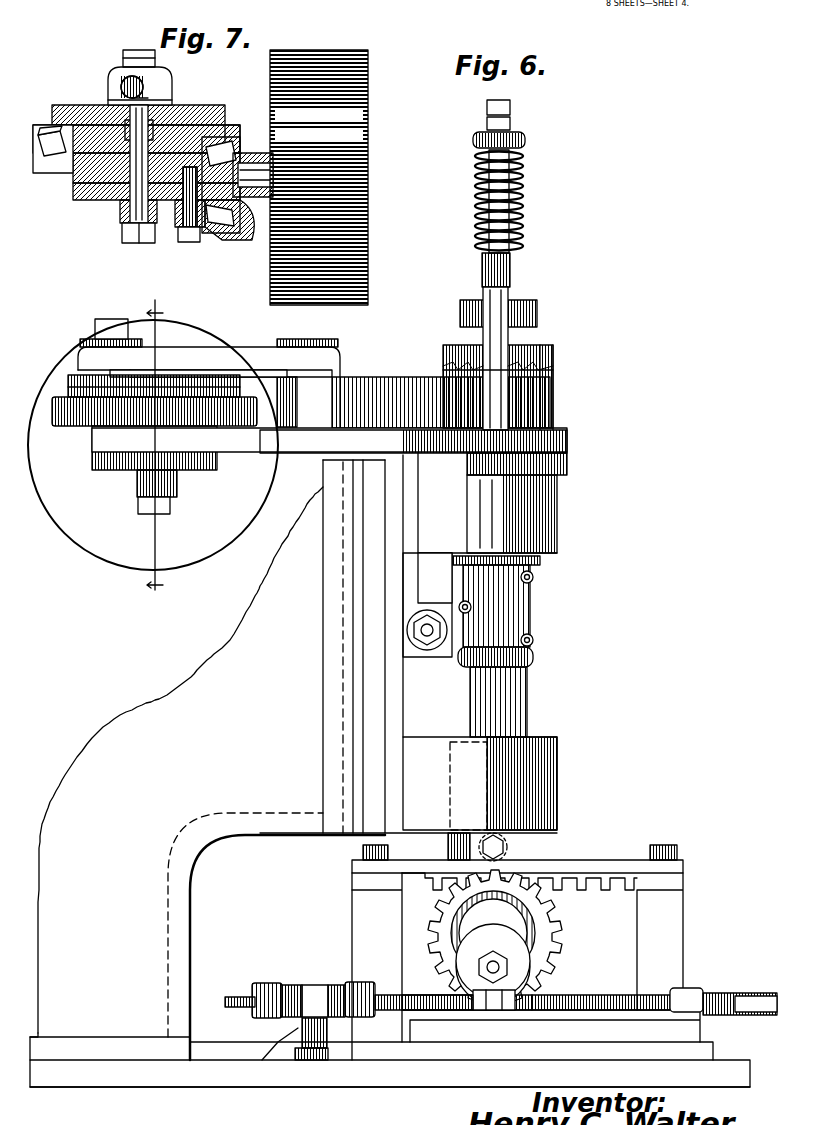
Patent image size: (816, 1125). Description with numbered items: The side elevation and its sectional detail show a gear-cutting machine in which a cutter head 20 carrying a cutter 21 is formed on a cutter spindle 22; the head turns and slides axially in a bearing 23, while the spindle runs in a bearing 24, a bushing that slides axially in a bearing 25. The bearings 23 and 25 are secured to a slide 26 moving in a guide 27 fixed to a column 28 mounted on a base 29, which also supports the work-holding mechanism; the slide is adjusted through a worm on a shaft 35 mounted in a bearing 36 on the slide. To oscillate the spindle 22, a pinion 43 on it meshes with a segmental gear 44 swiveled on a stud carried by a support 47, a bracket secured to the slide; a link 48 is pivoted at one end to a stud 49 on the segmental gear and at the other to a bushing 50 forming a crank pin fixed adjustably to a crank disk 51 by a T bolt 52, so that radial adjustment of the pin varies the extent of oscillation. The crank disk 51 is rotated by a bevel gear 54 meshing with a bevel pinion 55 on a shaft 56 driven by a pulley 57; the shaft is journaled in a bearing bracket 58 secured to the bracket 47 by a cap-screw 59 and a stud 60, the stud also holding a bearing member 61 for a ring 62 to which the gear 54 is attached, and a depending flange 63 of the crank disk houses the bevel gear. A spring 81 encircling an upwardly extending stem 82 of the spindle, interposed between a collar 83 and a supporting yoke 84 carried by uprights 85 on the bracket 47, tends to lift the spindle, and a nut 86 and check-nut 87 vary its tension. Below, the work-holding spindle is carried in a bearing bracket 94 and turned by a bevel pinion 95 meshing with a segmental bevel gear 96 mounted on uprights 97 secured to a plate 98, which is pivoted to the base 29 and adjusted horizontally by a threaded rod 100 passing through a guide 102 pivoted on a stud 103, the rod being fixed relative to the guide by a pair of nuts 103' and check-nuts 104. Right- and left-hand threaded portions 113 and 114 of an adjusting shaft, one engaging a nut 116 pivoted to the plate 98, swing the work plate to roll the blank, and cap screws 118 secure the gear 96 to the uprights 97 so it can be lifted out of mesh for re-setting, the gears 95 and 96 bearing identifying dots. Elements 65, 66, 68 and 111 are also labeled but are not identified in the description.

In FIG. 6, the cutter head 20 is at (446, 847).
In FIG. 6, the cutter 21 is at (505, 846).
In FIG. 6, the cutter spindle 22 is at (510, 702).
In FIG. 6, the bearing 23 is at (552, 775).
In FIG. 6, the bearing 24 is at (540, 562).
In FIG. 6, the bearing 25 is at (550, 525).
In FIG. 6, the slide 26 is at (388, 733).
In FIG. 6, the guide 27 is at (355, 669).
In FIG. 6, the column 28 is at (322, 622).
In FIG. 6, the base 29 is at (305, 1078).
In FIG. 6, the shaft 35 is at (426, 636).
In FIG. 6, the bearing 36 is at (440, 657).
In FIG. 6, the pinion 43 is at (548, 405).
In FIG. 6, the segmental gear 44 is at (385, 390).
In FIG. 7, the support 47 is at (74, 165).
In FIG. 6, the support 47 is at (255, 445).
In FIG. 7, the link 48 is at (122, 88).
In FIG. 6, the link 48 is at (248, 358).
In FIG. 6, the stud 49 is at (312, 339).
In FIG. 7, the bushing 50 is at (112, 74).
In FIG. 6, the bushing 50 is at (90, 341).
In FIG. 7, the crank disk 51 is at (200, 106).
In FIG. 6, the crank disk 51 is at (70, 380).
In FIG. 7, the T bolt 52 is at (138, 49).
In FIG. 6, the T bolt 52 is at (110, 319).
In FIG. 7, the bevel gear 54 is at (52, 150).
In FIG. 7, the bevel pinion 55 is at (228, 230).
In FIG. 7, the shaft 56 is at (255, 152).
In FIG. 7, the pulley 57 is at (318, 52).
In FIG. 6, the pulley 57 is at (190, 340).
In FIG. 7, the bearing bracket 58 is at (95, 193).
In FIG. 6, the bearing bracket 58 is at (104, 465).
In FIG. 7, the cap-screw 59 is at (188, 236).
In FIG. 7, the stud 60 is at (134, 230).
In FIG. 6, the stud 60 is at (148, 512).
In FIG. 7, the bearing member 61 is at (126, 130).
In FIG. 7, the ring 62 is at (234, 126).
In FIG. 6, the flange 63 is at (68, 415).
In FIG. 6, the thread 65 is at (554, 370).
In FIG. 6, the sleeve nut 66 is at (545, 345).
In FIG. 6, the nut 68 is at (470, 310).
In FIG. 6, the spring 81 is at (525, 198).
In FIG. 6, the stem 82 is at (476, 210).
In FIG. 6, the collar 83 is at (526, 140).
In FIG. 6, the supporting yoke 84 is at (511, 272).
In FIG. 6, the uprights 85 is at (484, 331).
In FIG. 6, the nut 86 is at (511, 122).
In FIG. 6, the check-nut 87 is at (511, 107).
In FIG. 6, the bearing bracket 94 is at (525, 930).
In FIG. 6, the bevel pinion 95 is at (530, 950).
In FIG. 6, the segmental bevel gear 96 is at (580, 860).
In FIG. 6, the uprights 97 is at (352, 922).
In FIG. 6, the plate 98 is at (716, 1046).
In FIG. 6, the threaded rod 100 is at (238, 996).
In FIG. 6, the guide 102 is at (312, 984).
In FIG. 6, the stud 103 is at (336, 973).
In FIG. 6, the nuts 103' is at (283, 973).
In FIG. 6, the check-nuts 104 is at (262, 982).
In FIG. 6, the slide 111 is at (455, 1030).
In FIG. 6, the right-hand threaded portion 113 is at (555, 996).
In FIG. 6, the left-hand threaded portion 114 is at (605, 996).
In FIG. 6, the nut 116 is at (700, 990).
In FIG. 6, the cap screws 118 is at (362, 853).